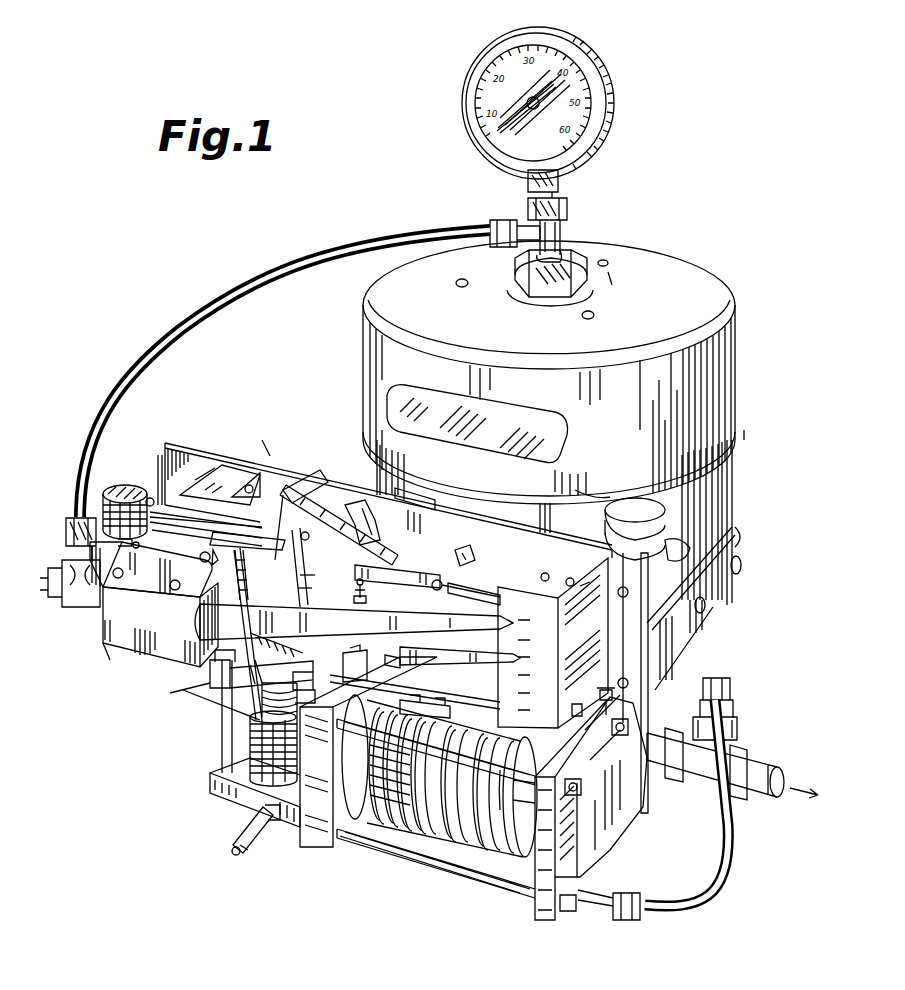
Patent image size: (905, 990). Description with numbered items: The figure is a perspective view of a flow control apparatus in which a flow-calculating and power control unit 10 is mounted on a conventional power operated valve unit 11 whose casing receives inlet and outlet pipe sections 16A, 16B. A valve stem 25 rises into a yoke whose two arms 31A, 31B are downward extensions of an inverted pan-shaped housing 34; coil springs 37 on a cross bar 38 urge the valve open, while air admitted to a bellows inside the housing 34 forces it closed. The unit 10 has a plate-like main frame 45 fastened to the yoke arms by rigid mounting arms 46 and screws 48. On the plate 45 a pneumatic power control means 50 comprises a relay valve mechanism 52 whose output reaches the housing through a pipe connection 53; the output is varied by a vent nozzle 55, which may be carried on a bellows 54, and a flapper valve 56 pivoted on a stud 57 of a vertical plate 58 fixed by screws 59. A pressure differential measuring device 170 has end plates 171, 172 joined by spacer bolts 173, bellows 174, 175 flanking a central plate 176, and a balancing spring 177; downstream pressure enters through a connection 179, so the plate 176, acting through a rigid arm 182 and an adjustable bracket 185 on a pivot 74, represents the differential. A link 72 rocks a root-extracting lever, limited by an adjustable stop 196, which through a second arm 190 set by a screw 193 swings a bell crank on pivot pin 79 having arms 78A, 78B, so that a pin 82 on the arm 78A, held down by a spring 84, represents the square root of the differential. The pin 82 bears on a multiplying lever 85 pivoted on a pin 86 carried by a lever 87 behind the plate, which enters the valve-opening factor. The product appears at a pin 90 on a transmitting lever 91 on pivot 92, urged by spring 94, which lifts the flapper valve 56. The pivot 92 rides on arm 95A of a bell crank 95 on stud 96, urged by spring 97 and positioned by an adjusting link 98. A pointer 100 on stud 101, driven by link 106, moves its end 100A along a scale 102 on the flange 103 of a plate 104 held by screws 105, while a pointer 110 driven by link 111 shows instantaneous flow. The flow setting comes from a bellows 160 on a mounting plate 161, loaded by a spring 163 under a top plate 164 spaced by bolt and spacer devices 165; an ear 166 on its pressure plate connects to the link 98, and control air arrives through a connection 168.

The flow-calculating and power control unit 10 is at (272, 446).
The power operated valve unit 11 is at (746, 466).
The inlet pipe section 16A is at (70, 603).
The outlet pipe section 16B is at (750, 800).
The valve stem 25 is at (560, 500).
The yoke arm 31A is at (722, 515).
The yoke arm 31B is at (376, 470).
The inverted pan-shaped housing 34 is at (690, 295).
The expansive coil springs 37 is at (660, 512).
The cross bar 38 is at (690, 552).
The plate-like main frame 45 is at (200, 455).
The rigid mounting arms 46 is at (690, 663).
The screws 48 is at (742, 572).
The power control means 50 is at (138, 665).
The relay valve mechanism 52 is at (102, 650).
The pipe connection 53 is at (155, 335).
The bellows 54 is at (116, 487).
The vent nozzle 55 is at (148, 498).
The flapper valve 56 is at (160, 470).
The horizontal pivot stud 57 is at (180, 527).
The vertical plate 58 is at (152, 585).
The screws 59 is at (120, 580).
The link 72 is at (465, 695).
The pivot 74 is at (410, 660).
The bell crank arm 78A is at (410, 568).
The bell crank arm 78B is at (480, 590).
The pivot pin 79 is at (470, 556).
The pin 82 is at (363, 586).
The spring 84 is at (367, 600).
The multiplying lever 85 is at (395, 552).
The pivot pin 86 is at (370, 522).
The carrier lever 87 is at (395, 490).
The pin 90 is at (305, 545).
The transmitting lever 91 is at (300, 508).
The pivot 92 is at (255, 552).
The spring 94 is at (250, 578).
The bell crank 95 is at (240, 612).
The bell crank arm 95A is at (278, 525).
The pivot stud 96 is at (200, 557).
The spring 97 is at (275, 646).
The vertical adjusting link 98 is at (248, 690).
The pointer 100 is at (405, 620).
The pointer end 100A is at (511, 626).
The pivot stud 101 is at (312, 576).
The scale 102 is at (560, 640).
The flange 103 is at (540, 576).
The scale plate 104 is at (585, 577).
The screws 105 is at (630, 683).
The link 106 is at (308, 560).
The pointer 110 is at (450, 660).
The link 111 is at (312, 590).
The bellows 160 is at (250, 790).
The mounting plate 161 is at (240, 795).
The expansive coil spring 163 is at (305, 705).
The top plate 164 is at (210, 675).
The bolt and spacer devices 165 is at (258, 702).
The upstanding ear 166 is at (252, 745).
The connection 168 is at (258, 855).
The pressure differential measuring device 170 is at (512, 862).
The end plate 171 is at (548, 915).
The end plate 172 is at (315, 850).
The spacer bolts 173 is at (432, 876).
The bellows 174 is at (400, 815).
The bellows 175 is at (480, 840).
The central plate 176 is at (430, 850).
The balancing spring 177 is at (490, 882).
The connection 179 is at (705, 870).
The rigid arm 182 is at (465, 708).
The adjustable bracket 185 is at (380, 675).
The second arm 190 is at (490, 600).
The threaded screw 193 is at (571, 577).
The adjustable stop 196 is at (595, 708).